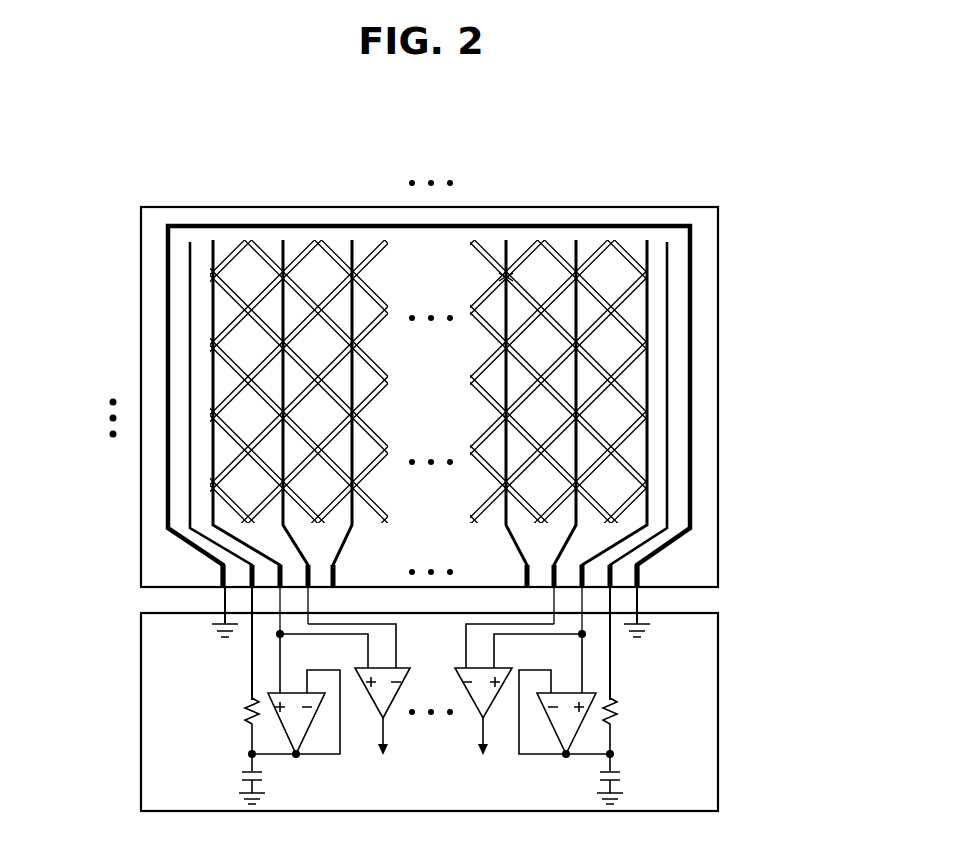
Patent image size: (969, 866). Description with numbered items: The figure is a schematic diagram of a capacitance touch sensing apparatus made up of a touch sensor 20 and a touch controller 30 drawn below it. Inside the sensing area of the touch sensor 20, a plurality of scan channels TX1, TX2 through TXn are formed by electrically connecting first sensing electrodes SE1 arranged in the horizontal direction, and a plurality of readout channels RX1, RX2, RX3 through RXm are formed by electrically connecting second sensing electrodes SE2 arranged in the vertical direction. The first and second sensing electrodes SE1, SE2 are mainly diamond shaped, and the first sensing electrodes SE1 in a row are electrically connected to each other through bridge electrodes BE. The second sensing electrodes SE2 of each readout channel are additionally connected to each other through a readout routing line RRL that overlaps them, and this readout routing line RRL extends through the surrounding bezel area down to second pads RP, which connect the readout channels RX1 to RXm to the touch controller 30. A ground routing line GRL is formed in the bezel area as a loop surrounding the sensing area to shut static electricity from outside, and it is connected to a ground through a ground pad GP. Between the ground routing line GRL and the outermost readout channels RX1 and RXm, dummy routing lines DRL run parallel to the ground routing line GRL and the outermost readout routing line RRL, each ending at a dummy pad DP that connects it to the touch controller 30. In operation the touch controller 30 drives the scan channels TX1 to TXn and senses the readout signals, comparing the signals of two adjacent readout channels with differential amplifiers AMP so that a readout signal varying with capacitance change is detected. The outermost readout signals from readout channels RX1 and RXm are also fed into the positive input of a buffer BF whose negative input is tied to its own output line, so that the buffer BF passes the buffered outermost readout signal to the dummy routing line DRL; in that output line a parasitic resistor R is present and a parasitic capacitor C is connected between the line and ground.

The touch sensor 20 is at (719, 229).
The touch controller 30 is at (719, 668).
The readout channel RX1 is at (213, 226).
The readout channel RX2 is at (283, 226).
The readout channel RX3 is at (352, 226).
The readout channel RXm is at (647, 226).
The scan channel TX1 is at (202, 277).
The scan channel TX2 is at (202, 345).
The scan channel TXn is at (202, 487).
The bridge electrode BE is at (498, 275).
The first sensing electrode SE1 is at (548, 275).
The second sensing electrode SE2 is at (645, 307).
The ground routing line GRL is at (168, 250).
The readout routing line RRL is at (348, 360).
The dummy routing line DRL is at (190, 513).
The ground pad GP is at (222, 580).
The dummy pad DP is at (222, 588).
The second pad RP is at (310, 572).
The differential amplifier AMP is at (388, 666).
The buffer BF is at (267, 697).
The parasitic resistor R is at (430, 726).
The parasitic capacitor C is at (430, 779).